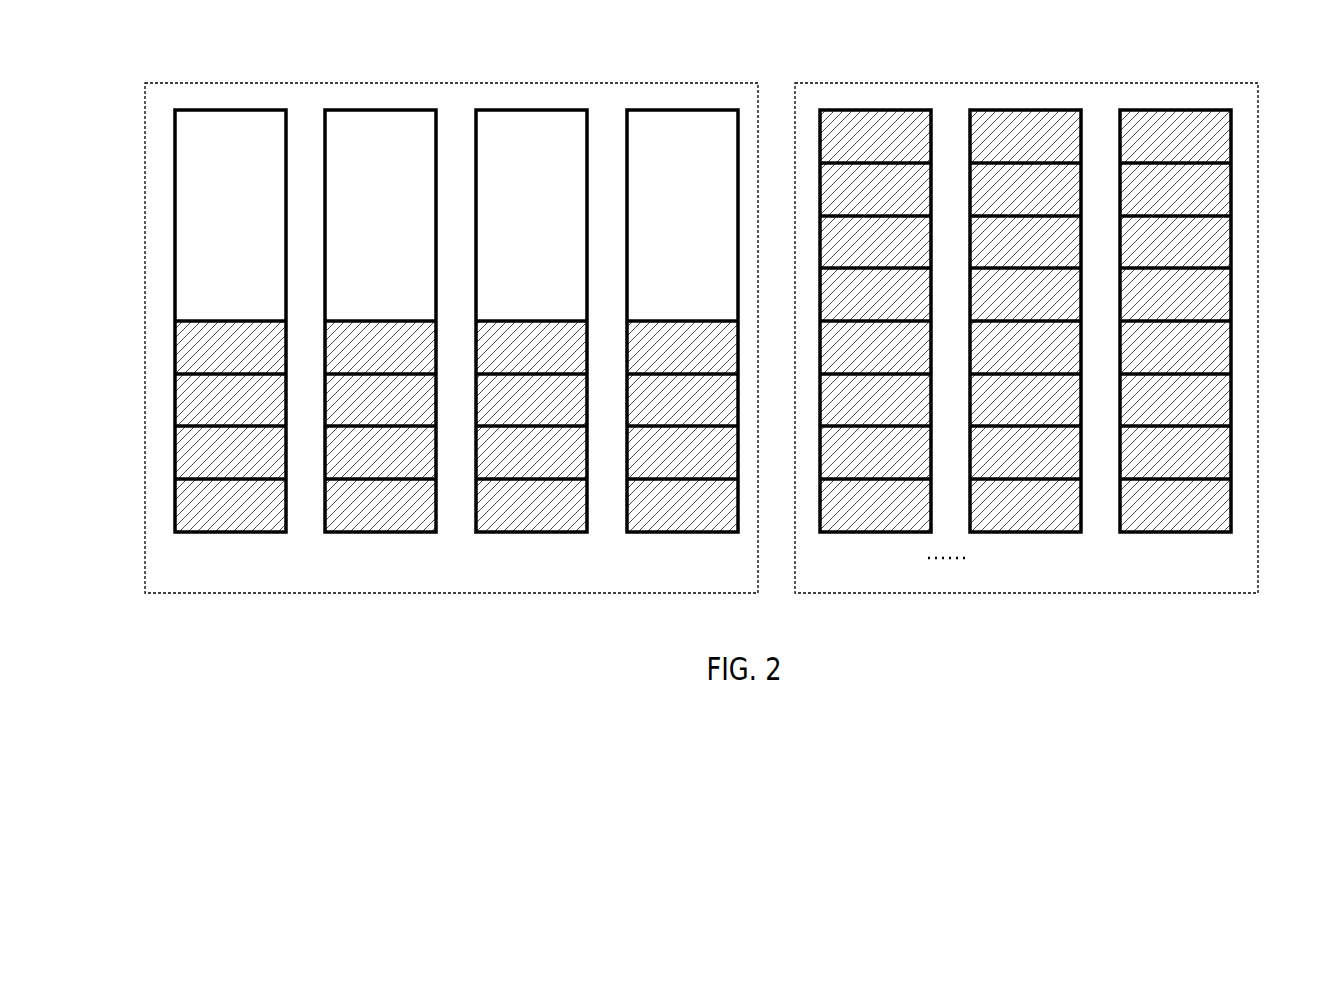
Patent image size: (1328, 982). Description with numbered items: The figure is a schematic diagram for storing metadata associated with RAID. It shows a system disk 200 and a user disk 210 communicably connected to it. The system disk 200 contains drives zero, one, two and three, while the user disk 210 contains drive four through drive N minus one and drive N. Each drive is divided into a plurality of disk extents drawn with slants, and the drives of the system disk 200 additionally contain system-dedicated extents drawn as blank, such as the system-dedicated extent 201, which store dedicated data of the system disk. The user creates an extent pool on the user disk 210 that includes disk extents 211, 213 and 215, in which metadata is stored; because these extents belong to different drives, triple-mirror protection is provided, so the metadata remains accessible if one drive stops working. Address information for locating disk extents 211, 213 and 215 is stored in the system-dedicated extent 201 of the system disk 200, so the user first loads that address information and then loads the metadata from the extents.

The system disk 200 is at (482, 315).
The user disk 210 is at (1058, 315).
The system-dedicated extent 201 is at (361, 224).
The disk extent 211 is at (857, 150).
The disk extent 213 is at (1006, 253).
The disk extent 215 is at (1158, 201).